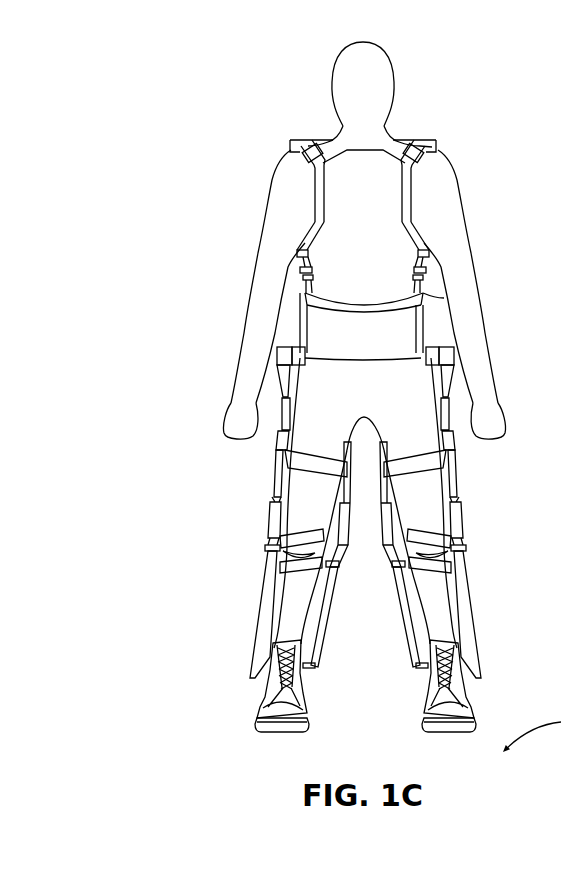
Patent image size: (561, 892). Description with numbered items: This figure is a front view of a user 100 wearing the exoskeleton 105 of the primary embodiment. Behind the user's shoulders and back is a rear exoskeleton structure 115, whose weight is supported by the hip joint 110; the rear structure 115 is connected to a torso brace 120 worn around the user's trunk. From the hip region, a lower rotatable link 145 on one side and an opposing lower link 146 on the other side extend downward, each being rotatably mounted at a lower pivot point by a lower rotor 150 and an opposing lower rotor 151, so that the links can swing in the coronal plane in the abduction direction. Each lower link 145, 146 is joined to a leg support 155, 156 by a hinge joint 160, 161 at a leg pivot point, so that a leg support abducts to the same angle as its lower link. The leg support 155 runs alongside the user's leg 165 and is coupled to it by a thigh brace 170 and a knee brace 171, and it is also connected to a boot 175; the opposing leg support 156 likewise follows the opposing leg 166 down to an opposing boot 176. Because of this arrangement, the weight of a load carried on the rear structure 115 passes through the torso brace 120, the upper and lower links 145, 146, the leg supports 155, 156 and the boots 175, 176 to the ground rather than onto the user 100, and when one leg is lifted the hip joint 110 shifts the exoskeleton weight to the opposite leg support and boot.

The user 100 is at (400, 71).
The exoskeleton 105 is at (300, 138).
The hip joint 110 is at (305, 342).
The rear exoskeleton structure 115 is at (440, 143).
The torso brace 120 is at (444, 298).
The lower rotatable link 145 is at (277, 360).
The opposing lower link 146 is at (450, 359).
The lower rotor 150 is at (300, 352).
The opposing lower rotor 151 is at (450, 348).
The leg support 155 is at (286, 454).
The leg support 156 is at (468, 440).
The hinge joint 160 is at (277, 352).
The hinge joint 161 is at (440, 352).
The leg 165 is at (282, 597).
The opposing leg 166 is at (440, 600).
The brace 170 is at (282, 482).
The brace 171 is at (316, 573).
The boot 175 is at (304, 665).
The opposing boot 176 is at (453, 698).